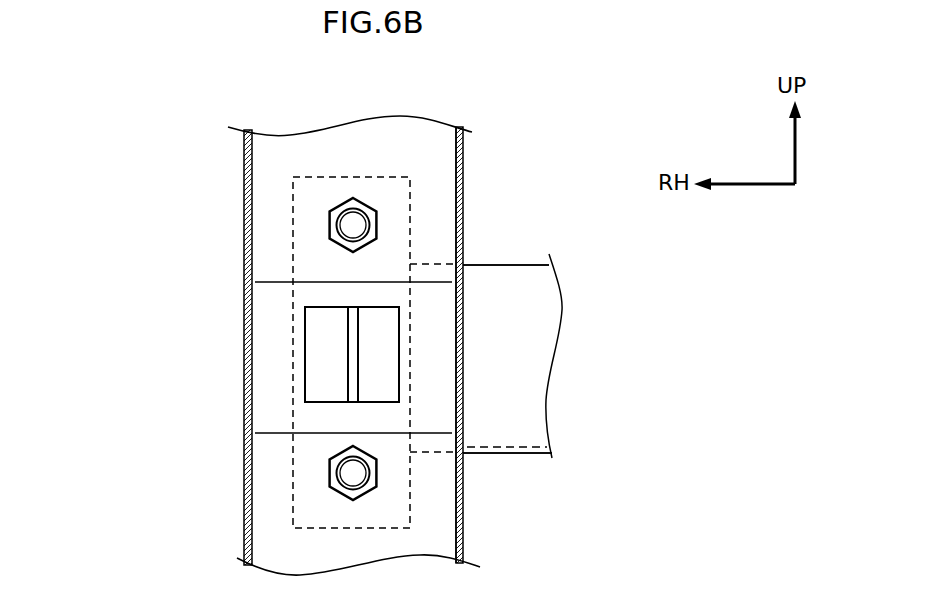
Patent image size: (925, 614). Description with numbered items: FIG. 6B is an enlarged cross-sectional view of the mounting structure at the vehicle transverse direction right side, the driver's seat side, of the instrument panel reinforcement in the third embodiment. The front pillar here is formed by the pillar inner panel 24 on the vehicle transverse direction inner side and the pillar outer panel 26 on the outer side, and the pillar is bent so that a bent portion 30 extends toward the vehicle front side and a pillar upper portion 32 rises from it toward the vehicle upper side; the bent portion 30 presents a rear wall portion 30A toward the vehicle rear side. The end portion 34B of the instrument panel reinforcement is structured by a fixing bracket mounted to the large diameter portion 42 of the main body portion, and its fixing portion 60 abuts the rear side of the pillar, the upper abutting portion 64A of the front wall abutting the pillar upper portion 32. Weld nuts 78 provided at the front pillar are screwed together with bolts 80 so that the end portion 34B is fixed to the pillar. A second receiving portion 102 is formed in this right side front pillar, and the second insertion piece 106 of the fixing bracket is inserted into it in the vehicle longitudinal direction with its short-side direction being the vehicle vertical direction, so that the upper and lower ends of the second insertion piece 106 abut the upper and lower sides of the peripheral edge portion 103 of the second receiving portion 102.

The end portion 34B is at (516, 146).
The pillar inner panel 24 is at (463, 182).
The pillar upper portion 32 is at (463, 212).
The pillar outer panel 26 is at (245, 198).
The bent portion 30 is at (472, 360).
The rear wall portion 30A is at (463, 298).
The large diameter portion 42 is at (537, 347).
The upper abutting portion 64A is at (291, 179).
The fixing portion 60 is at (272, 474).
The second receiving portion 102 is at (335, 400).
The peripheral edge portion 103 is at (342, 297).
The second insertion piece 106 is at (353, 347).
The weld nut 78 is at (344, 208).
The bolt 80 is at (353, 226).